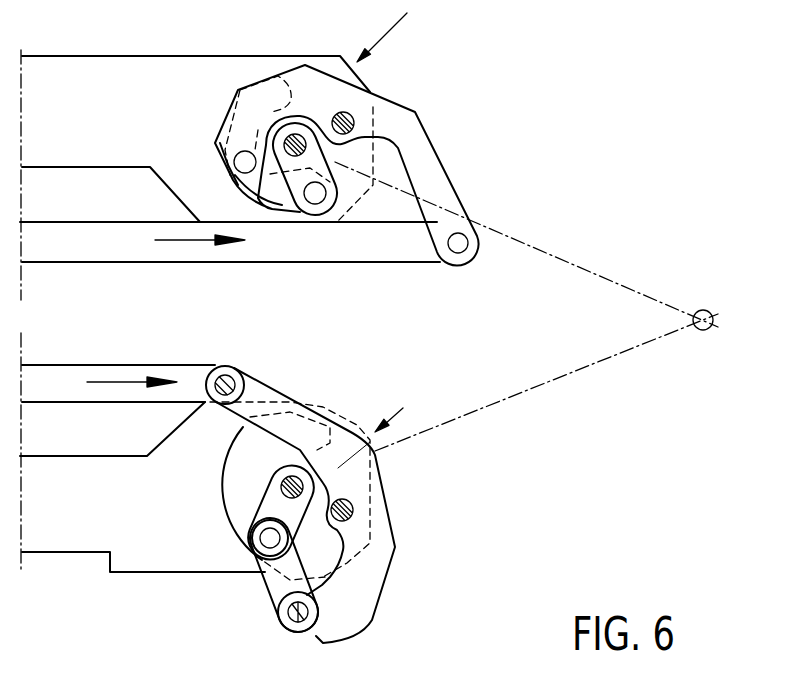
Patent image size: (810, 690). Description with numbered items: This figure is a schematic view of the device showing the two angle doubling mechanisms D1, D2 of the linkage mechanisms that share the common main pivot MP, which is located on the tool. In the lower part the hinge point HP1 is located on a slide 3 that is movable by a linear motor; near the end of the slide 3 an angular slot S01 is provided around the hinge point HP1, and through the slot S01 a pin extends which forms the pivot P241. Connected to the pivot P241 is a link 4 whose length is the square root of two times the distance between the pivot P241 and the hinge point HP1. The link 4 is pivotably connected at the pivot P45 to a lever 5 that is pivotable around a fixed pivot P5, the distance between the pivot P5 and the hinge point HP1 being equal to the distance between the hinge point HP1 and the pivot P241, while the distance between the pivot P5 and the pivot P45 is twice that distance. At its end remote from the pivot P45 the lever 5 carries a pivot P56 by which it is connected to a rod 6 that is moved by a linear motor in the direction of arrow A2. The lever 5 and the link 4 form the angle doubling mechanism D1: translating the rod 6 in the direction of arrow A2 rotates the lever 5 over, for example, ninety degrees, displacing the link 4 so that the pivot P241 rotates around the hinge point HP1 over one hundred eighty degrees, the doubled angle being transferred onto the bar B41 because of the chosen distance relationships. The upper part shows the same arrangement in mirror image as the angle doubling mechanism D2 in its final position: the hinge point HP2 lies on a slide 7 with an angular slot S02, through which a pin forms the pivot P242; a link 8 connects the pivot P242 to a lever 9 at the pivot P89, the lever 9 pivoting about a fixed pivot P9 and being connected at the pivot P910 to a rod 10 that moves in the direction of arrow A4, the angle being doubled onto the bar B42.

The slide 7 is at (112, 88).
The rod 10 is at (110, 245).
The arrow A4 is at (185, 265).
The lever 9 is at (412, 150).
The link 8 is at (272, 185).
The angular slot S02 is at (267, 97).
The bar B42 is at (290, 183).
The hinge point HP2 is at (285, 138).
The pivot P242 is at (315, 197).
The pivot P89 is at (238, 158).
The fixed pivot P9 is at (352, 115).
The pivot P910 is at (462, 240).
The angle doubling mechanism D2 is at (397, 31).
The main pivot MP is at (710, 315).
The rod 6 is at (70, 375).
The arrow A2 is at (127, 380).
The slide 3 is at (80, 527).
The lever 5 is at (257, 393).
The angle doubling mechanism D1 is at (393, 406).
The pivot P56 is at (243, 383).
The angular slot S01 is at (237, 497).
The bar B41 is at (258, 510).
The link 4 is at (280, 583).
The hinge point HP1 is at (281, 484).
The fixed pivot P5 is at (355, 508).
The pivot P241 is at (265, 555).
The pivot P45 is at (300, 627).